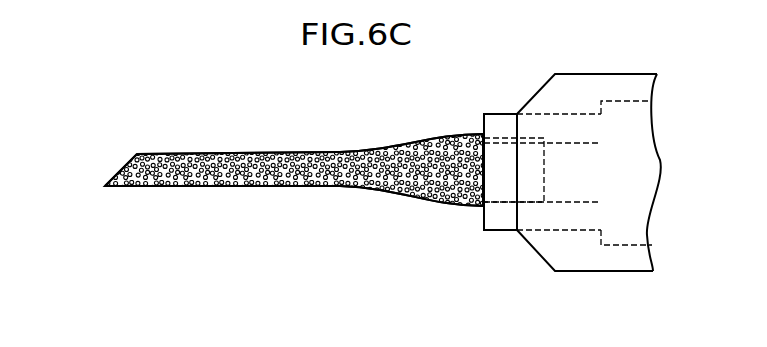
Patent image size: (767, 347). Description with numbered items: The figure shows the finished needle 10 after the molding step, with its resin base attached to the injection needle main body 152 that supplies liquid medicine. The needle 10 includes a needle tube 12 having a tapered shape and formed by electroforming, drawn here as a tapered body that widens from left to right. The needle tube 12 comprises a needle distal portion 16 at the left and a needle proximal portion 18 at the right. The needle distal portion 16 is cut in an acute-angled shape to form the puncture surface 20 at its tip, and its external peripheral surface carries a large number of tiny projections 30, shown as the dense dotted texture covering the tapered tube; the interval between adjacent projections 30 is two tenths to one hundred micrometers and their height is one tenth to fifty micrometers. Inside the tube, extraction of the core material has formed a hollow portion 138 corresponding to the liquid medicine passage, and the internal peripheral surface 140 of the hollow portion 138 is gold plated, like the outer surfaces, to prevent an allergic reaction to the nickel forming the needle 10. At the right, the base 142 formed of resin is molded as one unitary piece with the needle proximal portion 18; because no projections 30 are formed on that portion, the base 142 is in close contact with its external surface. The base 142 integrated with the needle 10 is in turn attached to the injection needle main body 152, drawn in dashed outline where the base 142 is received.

The needle 10 is at (297, 133).
The needle tube 12 is at (332, 187).
The needle distal portion 16 is at (212, 134).
The needle proximal portion 18 is at (530, 213).
The puncture surface 20 is at (118, 175).
The projections 30 is at (355, 152).
The hollow portion 138 is at (495, 175).
The internal peripheral surface 140 is at (495, 190).
The base 142 is at (503, 122).
The injection needle main body 152 is at (637, 89).